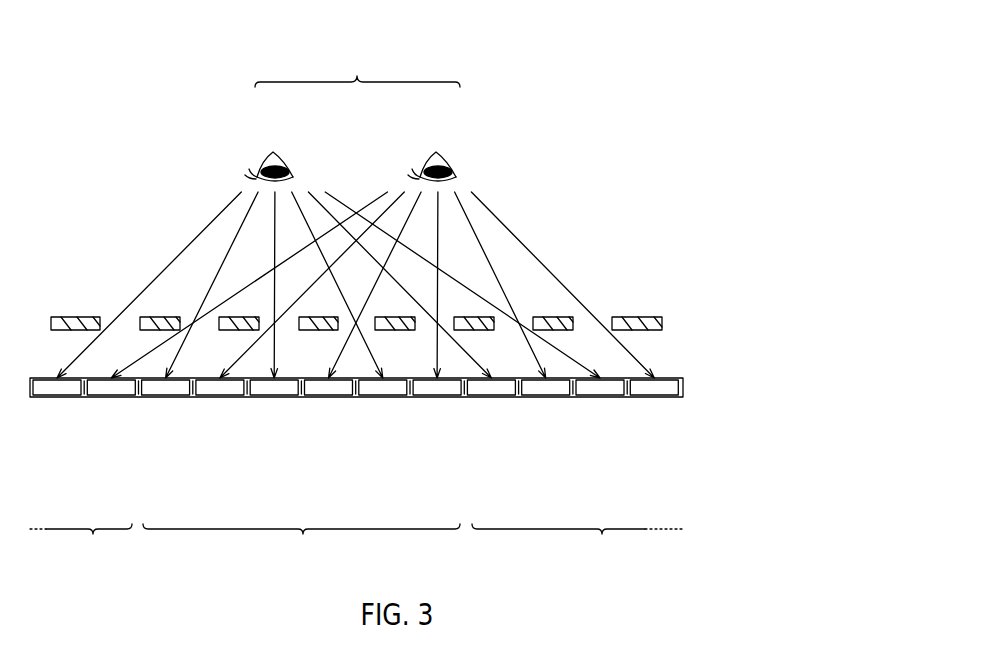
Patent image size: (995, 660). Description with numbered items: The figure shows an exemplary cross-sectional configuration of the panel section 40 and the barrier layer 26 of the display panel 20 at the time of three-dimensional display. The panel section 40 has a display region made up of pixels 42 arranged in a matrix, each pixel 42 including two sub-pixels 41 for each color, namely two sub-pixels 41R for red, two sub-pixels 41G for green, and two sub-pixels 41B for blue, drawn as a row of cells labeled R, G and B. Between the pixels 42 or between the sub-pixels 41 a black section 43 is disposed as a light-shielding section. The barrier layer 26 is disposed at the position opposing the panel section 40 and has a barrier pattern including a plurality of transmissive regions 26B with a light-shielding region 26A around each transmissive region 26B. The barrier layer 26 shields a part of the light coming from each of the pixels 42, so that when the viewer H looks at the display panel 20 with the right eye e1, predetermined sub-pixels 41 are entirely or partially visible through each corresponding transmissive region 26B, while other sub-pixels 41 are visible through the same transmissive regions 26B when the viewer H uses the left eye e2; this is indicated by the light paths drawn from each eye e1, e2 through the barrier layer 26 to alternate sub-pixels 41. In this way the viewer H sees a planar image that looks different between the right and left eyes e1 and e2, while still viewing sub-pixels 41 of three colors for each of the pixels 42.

The display panel 20 is at (785, 303).
The barrier layer 26 is at (411, 286).
The light-shielding region 26A is at (641, 316).
The transmissive region 26B is at (593, 299).
The panel section 40 is at (401, 446).
The sub-pixel 41 is at (355, 447).
The sub-pixel for blue 41B is at (58, 398).
The sub-pixel for red 41R is at (167, 398).
The sub-pixel for green 41G is at (275, 398).
The pixel 42 is at (356, 548).
The black section 43 is at (86, 398).
The right eye e1 is at (273, 152).
The left eye e2 is at (436, 152).
The viewer H is at (357, 65).